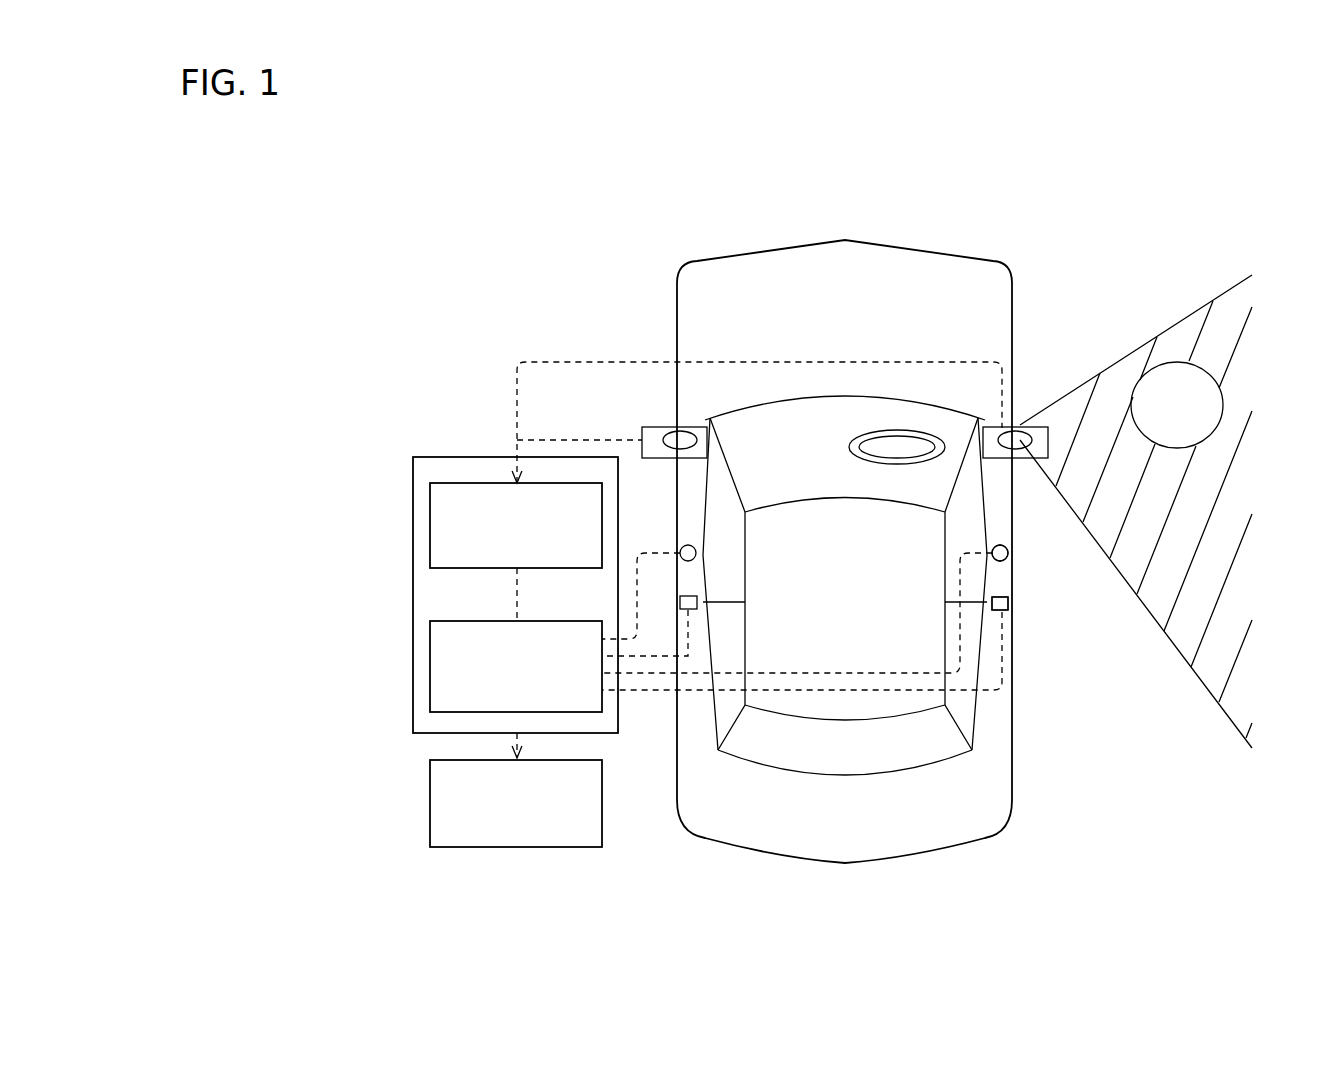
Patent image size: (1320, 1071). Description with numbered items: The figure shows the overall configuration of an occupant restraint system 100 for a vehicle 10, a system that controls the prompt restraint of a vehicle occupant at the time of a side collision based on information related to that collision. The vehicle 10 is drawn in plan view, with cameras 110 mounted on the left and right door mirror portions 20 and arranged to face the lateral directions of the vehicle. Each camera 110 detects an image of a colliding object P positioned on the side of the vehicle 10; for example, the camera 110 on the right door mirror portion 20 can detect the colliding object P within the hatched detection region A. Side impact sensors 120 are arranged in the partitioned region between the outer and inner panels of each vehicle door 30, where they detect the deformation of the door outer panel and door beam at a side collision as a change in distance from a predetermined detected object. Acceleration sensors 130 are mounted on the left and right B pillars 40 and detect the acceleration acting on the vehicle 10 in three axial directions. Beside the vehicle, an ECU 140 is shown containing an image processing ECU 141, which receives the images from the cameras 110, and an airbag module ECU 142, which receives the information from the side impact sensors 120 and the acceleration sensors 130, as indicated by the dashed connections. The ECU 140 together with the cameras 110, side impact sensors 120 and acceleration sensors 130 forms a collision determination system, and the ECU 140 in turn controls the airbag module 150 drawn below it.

The vehicle 10 is at (959, 248).
The occupant restraint system 100 is at (574, 294).
The door mirror portion 20 is at (672, 410).
The camera 110 is at (668, 433).
The side impact sensor 120 is at (681, 545).
The acceleration sensor 130 is at (674, 607).
The vehicle door 30 is at (1020, 560).
The B pillar 40 is at (1017, 618).
The ECU 140 is at (457, 442).
The image processing ECU 141 is at (422, 507).
The airbag module ECU 142 is at (423, 644).
The airbag module 150 is at (422, 802).
The colliding object P is at (1168, 405).
The detection region A is at (1136, 511).